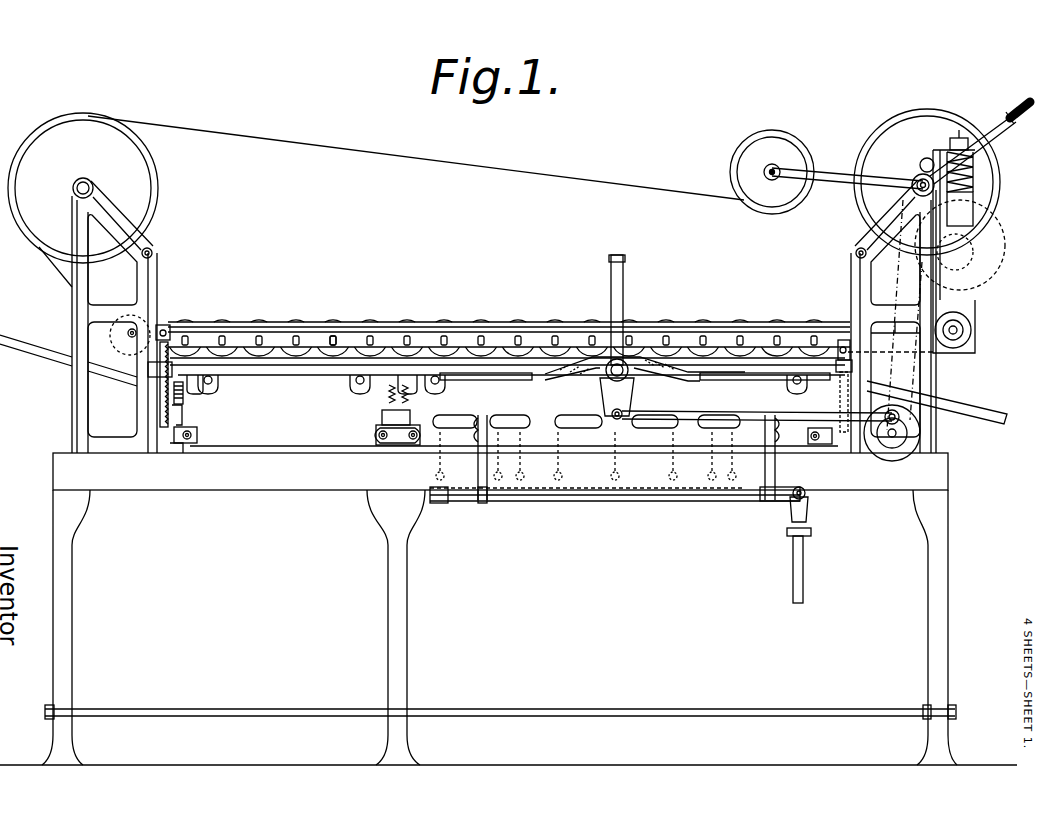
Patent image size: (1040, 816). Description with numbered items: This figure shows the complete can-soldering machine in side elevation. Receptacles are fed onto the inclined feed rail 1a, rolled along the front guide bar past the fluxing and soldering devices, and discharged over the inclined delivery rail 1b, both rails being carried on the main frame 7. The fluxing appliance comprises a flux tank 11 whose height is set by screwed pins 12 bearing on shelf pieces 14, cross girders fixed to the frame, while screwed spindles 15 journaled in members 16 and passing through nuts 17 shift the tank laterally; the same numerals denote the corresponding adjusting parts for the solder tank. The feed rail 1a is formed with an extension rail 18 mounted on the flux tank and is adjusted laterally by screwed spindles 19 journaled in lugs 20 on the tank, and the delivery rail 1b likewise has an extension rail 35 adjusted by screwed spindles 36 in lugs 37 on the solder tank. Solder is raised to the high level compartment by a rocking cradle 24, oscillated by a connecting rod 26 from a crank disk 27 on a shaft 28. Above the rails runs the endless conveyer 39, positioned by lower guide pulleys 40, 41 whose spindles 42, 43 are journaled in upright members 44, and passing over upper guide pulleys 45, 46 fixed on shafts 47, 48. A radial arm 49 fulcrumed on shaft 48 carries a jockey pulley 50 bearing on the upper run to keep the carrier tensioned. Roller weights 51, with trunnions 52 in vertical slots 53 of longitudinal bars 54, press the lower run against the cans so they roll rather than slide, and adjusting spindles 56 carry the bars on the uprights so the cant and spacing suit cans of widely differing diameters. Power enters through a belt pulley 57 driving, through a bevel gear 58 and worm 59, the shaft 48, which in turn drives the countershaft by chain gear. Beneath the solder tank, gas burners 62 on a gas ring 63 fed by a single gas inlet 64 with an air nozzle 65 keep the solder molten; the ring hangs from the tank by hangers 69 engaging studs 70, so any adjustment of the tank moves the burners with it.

The inclined feed rail 1a is at (28, 356).
The inclined delivery rail 1b is at (972, 410).
The main frame 7 is at (948, 469).
The flux tank 11 is at (274, 448).
The screwed pins 12 is at (184, 397).
The shelf pieces 14 is at (184, 423).
The screwed spindles 15 is at (187, 440).
The members 16 is at (172, 448).
The nuts 17 is at (197, 436).
The extension rail 18 is at (288, 373).
The screwed spindles 19 is at (214, 380).
The lugs 20 is at (212, 385).
The rocking cradle 24 is at (574, 375).
The connecting rod 26 is at (742, 400).
The crank disk 27 is at (884, 456).
The shaft 28 is at (893, 440).
The extension rail 35 is at (716, 376).
The screwed spindles 36 is at (441, 384).
The lugs 37 is at (441, 373).
The endless conveyer 39 is at (463, 168).
The guide pulley 40 is at (126, 340).
The guide pulley 41 is at (975, 345).
The spindle 42 is at (130, 330).
The spindle 43 is at (971, 328).
The upright members 44 is at (158, 268).
The guide pulley 45 is at (158, 181).
The guide pulley 46 is at (912, 111).
The shaft 47 is at (85, 180).
The shaft 48 is at (915, 177).
The radial arm 49 is at (838, 184).
The jockey pulley 50 is at (778, 132).
The roller weights 51 is at (265, 321).
The trunnions 52 is at (332, 335).
The vertical slots 53 is at (380, 335).
The longitudinal bars 54 is at (476, 323).
The adjusting spindles 56 is at (158, 399).
The belt pulley 57 is at (985, 287).
The bevel gear 58 is at (966, 248).
The worm 59 is at (975, 183).
The gas burners 62 is at (664, 467).
The gas ring 63 is at (579, 499).
The gas inlet 64 is at (804, 553).
The air nozzle 65 is at (806, 494).
The hangers 69 is at (483, 417).
The studs 70 is at (478, 432).